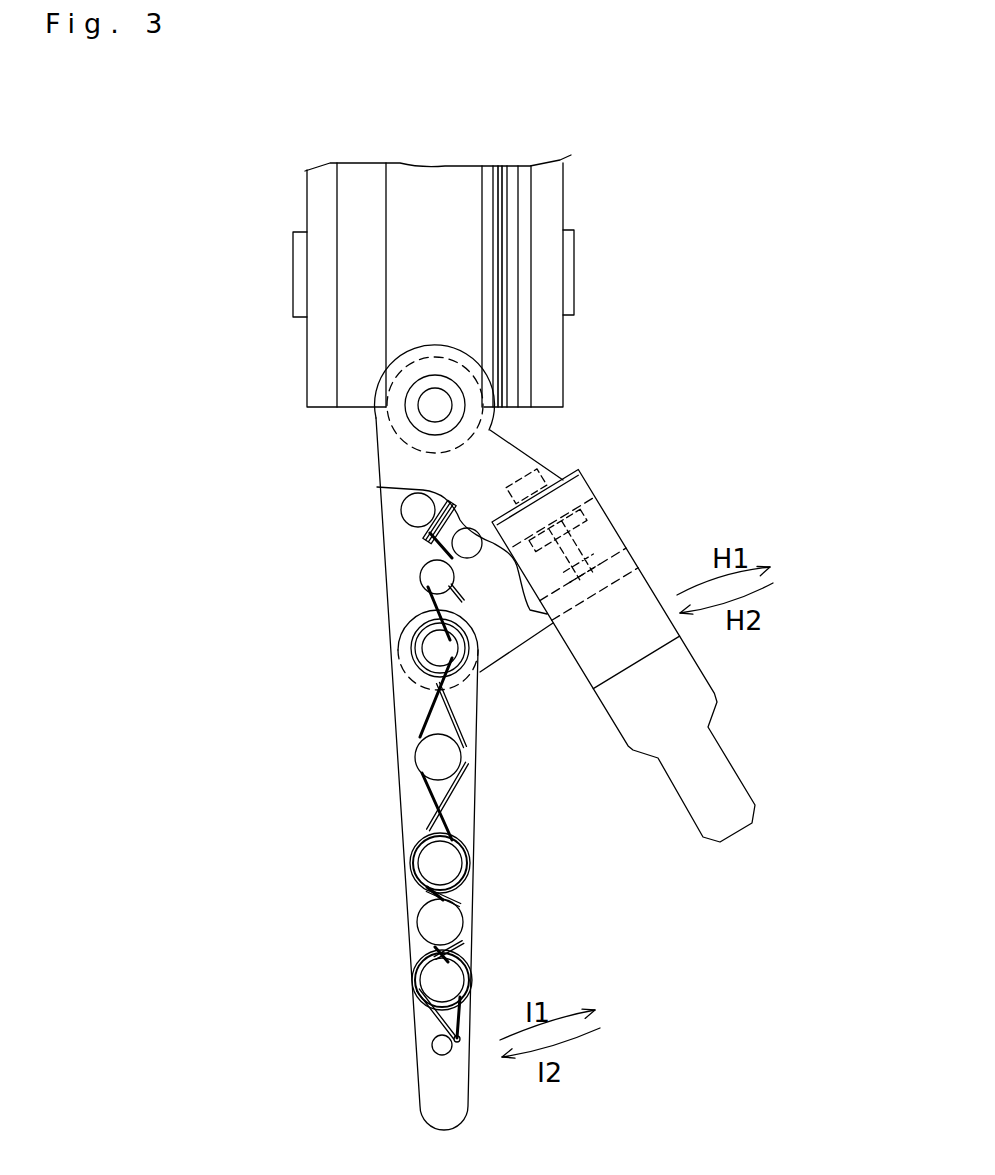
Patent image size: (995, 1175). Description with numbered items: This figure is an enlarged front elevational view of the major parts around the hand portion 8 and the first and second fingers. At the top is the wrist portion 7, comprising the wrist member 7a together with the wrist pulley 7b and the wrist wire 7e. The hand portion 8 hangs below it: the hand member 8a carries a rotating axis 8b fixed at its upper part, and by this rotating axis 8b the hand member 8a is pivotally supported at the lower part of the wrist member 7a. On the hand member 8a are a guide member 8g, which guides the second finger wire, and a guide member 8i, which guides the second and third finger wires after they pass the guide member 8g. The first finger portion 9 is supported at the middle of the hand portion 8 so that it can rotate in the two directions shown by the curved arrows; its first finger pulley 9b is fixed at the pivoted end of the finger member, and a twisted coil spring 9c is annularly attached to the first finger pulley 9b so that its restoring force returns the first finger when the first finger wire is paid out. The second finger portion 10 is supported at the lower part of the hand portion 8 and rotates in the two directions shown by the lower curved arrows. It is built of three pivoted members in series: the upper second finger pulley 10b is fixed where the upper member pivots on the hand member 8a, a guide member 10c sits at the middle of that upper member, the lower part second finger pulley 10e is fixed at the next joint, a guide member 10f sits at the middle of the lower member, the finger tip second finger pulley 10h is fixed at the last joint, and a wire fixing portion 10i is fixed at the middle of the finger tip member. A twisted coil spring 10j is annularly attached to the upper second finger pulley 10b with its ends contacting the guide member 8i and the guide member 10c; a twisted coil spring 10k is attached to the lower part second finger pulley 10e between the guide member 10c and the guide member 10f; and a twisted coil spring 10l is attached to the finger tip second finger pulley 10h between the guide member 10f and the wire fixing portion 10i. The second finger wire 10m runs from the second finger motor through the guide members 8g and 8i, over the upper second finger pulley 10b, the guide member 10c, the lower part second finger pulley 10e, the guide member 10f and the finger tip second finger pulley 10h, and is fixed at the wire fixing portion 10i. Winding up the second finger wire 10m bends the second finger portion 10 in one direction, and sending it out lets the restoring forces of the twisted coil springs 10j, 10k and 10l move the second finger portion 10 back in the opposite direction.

The wrist portion 7 is at (260, 218).
The wrist member 7a is at (318, 331).
The wrist pulley 7b is at (515, 206).
The wrist wire 7e is at (505, 267).
The hand portion 8 is at (270, 608).
The hand member 8a is at (398, 605).
The rotating axis 8b is at (420, 410).
The guide member 8g is at (427, 535).
The guide member 8i is at (428, 575).
The first finger portion 9 is at (755, 718).
The first finger pulley 9b is at (593, 553).
The twisted coil spring 9c is at (583, 517).
The second finger portion 10 is at (317, 907).
The upper second finger pulley 10b is at (438, 650).
The guide member 10c is at (450, 757).
The lower part second finger pulley 10e is at (450, 863).
The guide member 10f is at (448, 922).
The finger tip second finger pulley 10h is at (448, 978).
The wire fixing portion 10i is at (437, 1050).
The twisted coil spring 10j is at (427, 683).
The twisted coil spring 10k is at (428, 827).
The twisted coil spring 10l is at (437, 1015).
The second finger wire 10m is at (427, 793).